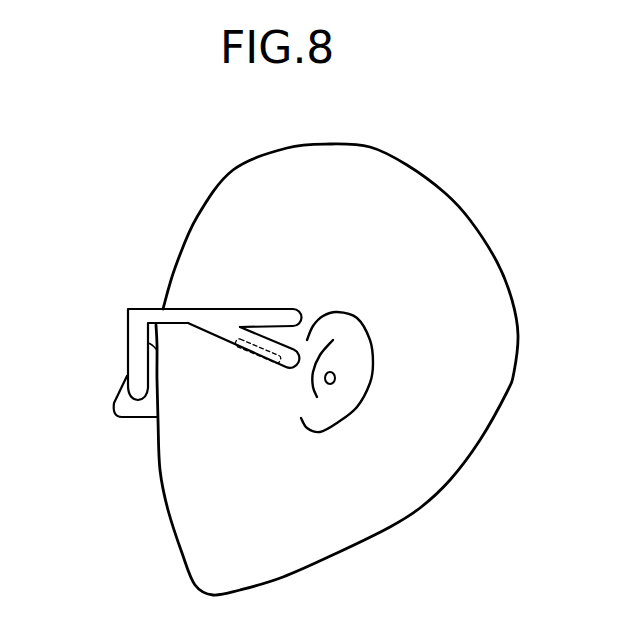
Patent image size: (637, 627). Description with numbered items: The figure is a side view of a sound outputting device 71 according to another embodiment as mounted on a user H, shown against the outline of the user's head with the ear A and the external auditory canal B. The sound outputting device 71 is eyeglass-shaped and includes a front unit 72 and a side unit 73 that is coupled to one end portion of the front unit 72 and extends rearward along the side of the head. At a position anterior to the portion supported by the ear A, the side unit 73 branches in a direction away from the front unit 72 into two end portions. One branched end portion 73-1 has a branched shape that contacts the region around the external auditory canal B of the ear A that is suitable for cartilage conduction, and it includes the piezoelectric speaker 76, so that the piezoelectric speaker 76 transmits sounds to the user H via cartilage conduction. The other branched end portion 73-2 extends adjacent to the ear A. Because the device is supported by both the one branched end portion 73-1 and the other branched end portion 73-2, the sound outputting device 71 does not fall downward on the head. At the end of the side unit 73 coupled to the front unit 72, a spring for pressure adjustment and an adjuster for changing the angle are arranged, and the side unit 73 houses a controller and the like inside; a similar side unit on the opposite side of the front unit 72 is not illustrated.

The user H is at (407, 180).
The ear A is at (373, 372).
The external auditory canal B is at (335, 382).
The sound outputting device 71 is at (132, 226).
The front unit 72 is at (137, 337).
The side unit 73 is at (231, 309).
The one branched end portion 73-1 is at (263, 362).
The other branched end portion 73-2 is at (286, 309).
The piezoelectric speaker 76 is at (228, 348).